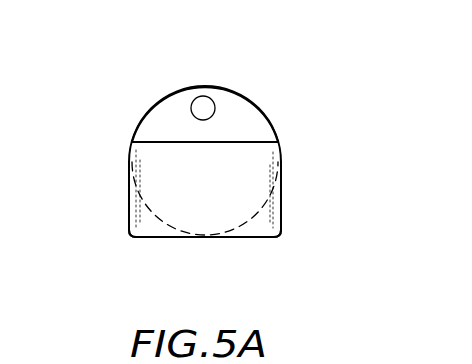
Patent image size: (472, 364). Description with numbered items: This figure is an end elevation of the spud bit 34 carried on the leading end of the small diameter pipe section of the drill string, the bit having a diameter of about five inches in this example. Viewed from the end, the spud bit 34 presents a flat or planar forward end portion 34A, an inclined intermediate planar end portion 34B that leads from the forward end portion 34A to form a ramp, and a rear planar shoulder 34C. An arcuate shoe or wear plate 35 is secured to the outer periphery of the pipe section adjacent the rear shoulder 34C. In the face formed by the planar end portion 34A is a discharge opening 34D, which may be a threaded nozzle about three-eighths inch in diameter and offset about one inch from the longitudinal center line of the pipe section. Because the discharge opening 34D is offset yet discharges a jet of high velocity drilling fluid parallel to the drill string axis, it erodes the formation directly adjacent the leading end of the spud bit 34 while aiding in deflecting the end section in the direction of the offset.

The spud bit 34 is at (131, 143).
The flat or planar forward end portion 34A is at (245, 110).
The inclined intermediate planar end portion 34B is at (258, 181).
The rear planar shoulder 34C is at (248, 238).
The discharge opening 34D is at (206, 104).
The arcuate shoe or wear plate 35 is at (156, 237).